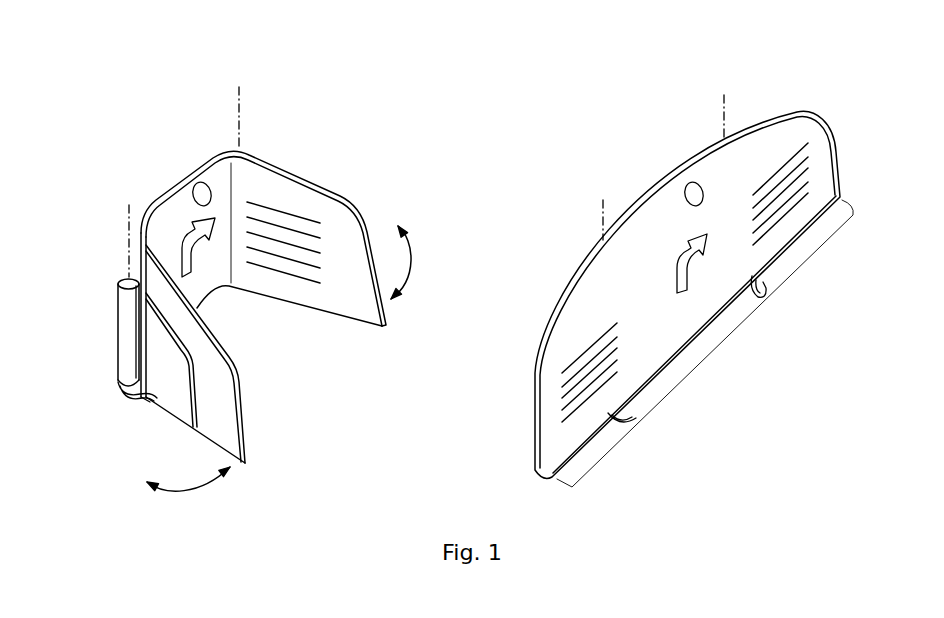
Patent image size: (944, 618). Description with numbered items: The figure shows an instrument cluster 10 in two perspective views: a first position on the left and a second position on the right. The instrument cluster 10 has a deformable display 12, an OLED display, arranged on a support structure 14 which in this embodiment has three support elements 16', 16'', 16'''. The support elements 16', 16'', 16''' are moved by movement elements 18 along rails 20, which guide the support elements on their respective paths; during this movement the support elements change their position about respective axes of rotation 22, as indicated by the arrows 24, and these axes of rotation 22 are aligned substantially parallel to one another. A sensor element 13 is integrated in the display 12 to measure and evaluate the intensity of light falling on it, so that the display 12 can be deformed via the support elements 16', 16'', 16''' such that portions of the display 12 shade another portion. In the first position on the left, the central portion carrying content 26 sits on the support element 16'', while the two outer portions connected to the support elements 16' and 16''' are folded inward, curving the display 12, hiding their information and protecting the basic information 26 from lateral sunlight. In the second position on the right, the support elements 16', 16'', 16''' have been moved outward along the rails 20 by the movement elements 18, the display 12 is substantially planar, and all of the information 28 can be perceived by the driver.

The instrument cluster 10 is at (150, 113).
The deformable display 12 is at (280, 157).
The sensor element 13 is at (206, 184).
The support structure 14 is at (158, 414).
The support element 16' is at (519, 282).
The support element 16'' is at (409, 271).
The support element 16''' is at (194, 357).
The movement element 18 is at (125, 317).
The rail 20 is at (125, 390).
The axis of rotation 22 is at (237, 108).
The arrow 24 is at (415, 262).
The content 26 is at (200, 283).
The information 28 is at (722, 348).